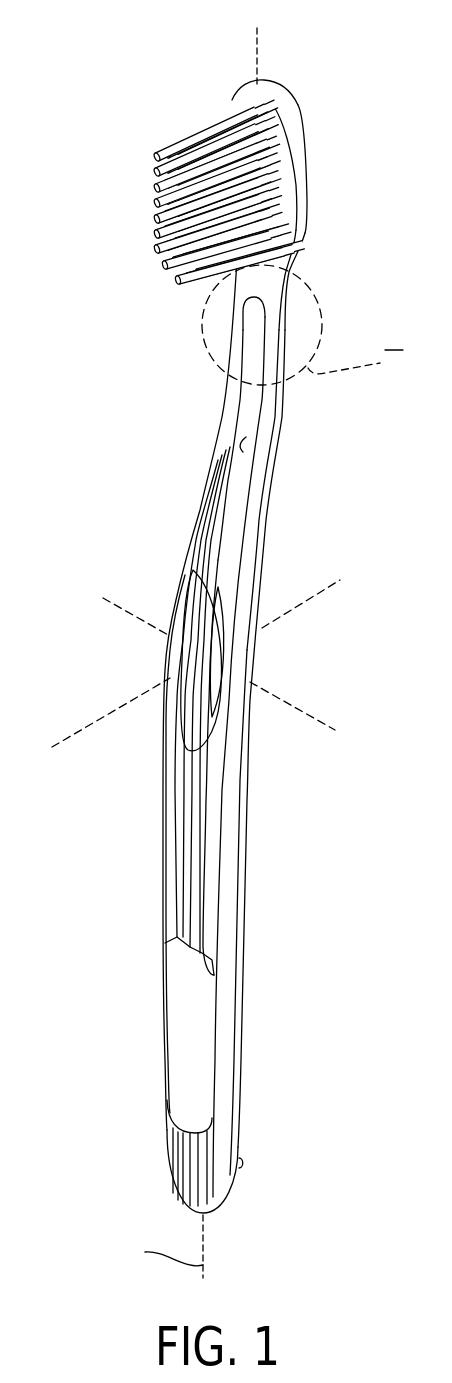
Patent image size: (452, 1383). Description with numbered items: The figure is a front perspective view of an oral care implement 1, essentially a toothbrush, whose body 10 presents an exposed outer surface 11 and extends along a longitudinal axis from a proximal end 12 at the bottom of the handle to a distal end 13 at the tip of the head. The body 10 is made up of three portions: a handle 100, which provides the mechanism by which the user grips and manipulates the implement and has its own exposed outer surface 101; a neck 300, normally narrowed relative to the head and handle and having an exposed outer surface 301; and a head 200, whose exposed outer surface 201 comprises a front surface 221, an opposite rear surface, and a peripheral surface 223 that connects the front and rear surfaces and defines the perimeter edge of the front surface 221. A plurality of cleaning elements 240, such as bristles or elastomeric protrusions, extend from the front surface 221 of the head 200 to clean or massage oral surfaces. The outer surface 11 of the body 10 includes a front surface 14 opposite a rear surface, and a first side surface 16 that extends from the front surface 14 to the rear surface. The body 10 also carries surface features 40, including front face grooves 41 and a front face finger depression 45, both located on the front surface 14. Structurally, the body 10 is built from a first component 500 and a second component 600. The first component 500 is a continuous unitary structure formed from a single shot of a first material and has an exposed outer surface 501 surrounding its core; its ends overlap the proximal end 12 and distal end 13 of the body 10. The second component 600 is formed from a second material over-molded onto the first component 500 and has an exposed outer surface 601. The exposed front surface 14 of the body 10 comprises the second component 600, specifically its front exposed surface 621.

The oral care implement 1 is at (128, 117).
The body 10 is at (265, 573).
The outer surface 11 is at (297, 187).
The proximal end 12 is at (210, 1212).
The distal end 13 is at (257, 90).
The front surface 14 is at (183, 1003).
The first side surface 16 is at (237, 722).
The surface features 40 is at (178, 830).
The front face grooves 41 is at (177, 903).
The front face finger depression 45 is at (180, 628).
The handle 100 is at (228, 956).
The outer surface 101 is at (193, 867).
The head 200 is at (300, 108).
The outer surface 201 is at (297, 157).
The front surface 221 is at (288, 232).
The peripheral surface 223 is at (298, 207).
The cleaning elements 240 is at (157, 222).
The neck 300 is at (235, 417).
The outer surface 301 is at (246, 446).
The first component 500 is at (276, 411).
The outer surface 501 is at (277, 302).
The second component 600 is at (192, 1053).
The outer surface 601 is at (220, 560).
The front exposed surface 621 is at (177, 788).